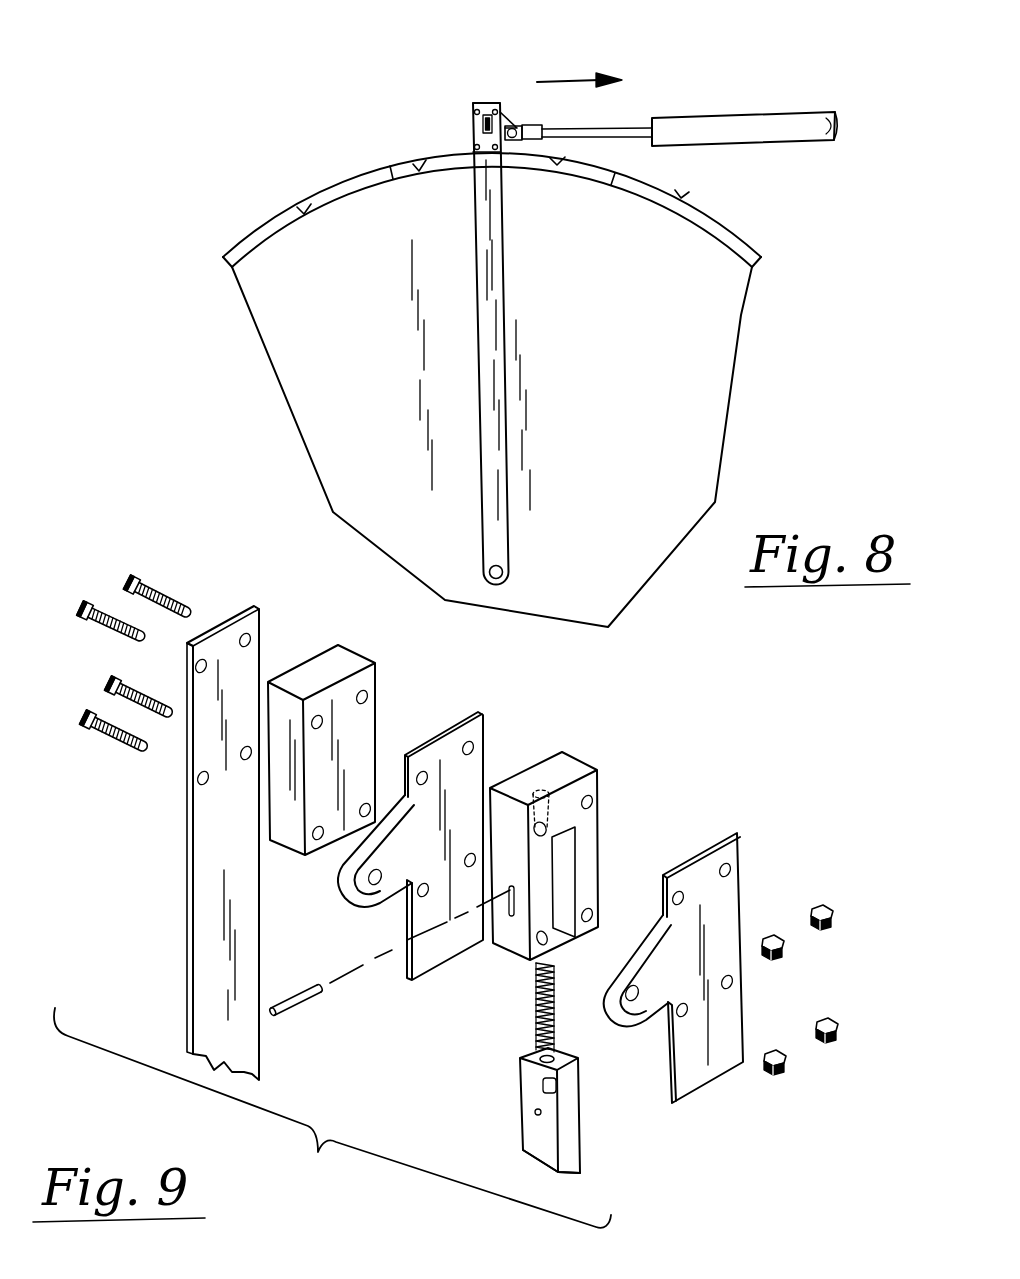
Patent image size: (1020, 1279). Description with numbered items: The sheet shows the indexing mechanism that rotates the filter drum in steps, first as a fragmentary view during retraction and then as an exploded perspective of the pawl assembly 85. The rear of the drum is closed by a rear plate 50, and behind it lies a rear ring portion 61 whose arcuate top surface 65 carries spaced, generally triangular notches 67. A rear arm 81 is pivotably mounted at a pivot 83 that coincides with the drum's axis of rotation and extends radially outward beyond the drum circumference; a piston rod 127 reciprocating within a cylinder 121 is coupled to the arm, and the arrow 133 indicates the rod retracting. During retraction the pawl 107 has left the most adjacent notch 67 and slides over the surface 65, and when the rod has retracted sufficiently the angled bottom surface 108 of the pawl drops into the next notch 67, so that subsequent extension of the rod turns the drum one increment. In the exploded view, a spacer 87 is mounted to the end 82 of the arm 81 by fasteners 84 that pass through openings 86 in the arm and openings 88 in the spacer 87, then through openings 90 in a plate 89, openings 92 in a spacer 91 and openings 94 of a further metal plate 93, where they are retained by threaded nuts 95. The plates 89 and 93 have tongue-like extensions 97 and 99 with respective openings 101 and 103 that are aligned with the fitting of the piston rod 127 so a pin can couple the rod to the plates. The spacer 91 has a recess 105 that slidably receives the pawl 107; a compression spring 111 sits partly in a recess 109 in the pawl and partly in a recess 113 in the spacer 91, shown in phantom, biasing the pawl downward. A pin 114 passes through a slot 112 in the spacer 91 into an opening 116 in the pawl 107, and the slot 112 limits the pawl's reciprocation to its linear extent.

In FIG. 8, the rear plate 50 is at (356, 306).
In FIG. 8, the rear ring portion 61 is at (458, 156).
In FIG. 8, the arcuate top surface 65 is at (394, 168).
In FIG. 8, the notches 67 is at (428, 168).
In FIG. 8, the rear arm 81 is at (504, 305).
In FIG. 8, the pivot 83 is at (508, 565).
In FIG. 8, the cylinder 121 is at (757, 122).
In FIG. 8, the piston rod 127 is at (612, 126).
In FIG. 8, the arrow 133 is at (573, 80).
In FIG. 9, the end of the arm 82 is at (226, 612).
In FIG. 9, the fasteners 84 is at (90, 603).
In FIG. 9, the pawl assembly 85 is at (446, 1026).
In FIG. 9, the openings 86 is at (251, 640).
In FIG. 9, the spacer 87 is at (344, 656).
In FIG. 9, the openings 88 is at (369, 693).
In FIG. 9, the plate 89 is at (478, 718).
In FIG. 9, the openings 90 is at (428, 771).
In FIG. 9, the spacer 91 is at (591, 838).
In FIG. 9, the openings 92 is at (596, 796).
In FIG. 9, the metal plate 93 is at (729, 893).
In FIG. 9, the openings 94 is at (730, 871).
In FIG. 9, the threaded nuts 95 is at (831, 1017).
In FIG. 9, the tongue-like extension 97 is at (357, 869).
In FIG. 9, the tongue-like extension 99 is at (655, 998).
In FIG. 9, the opening 101 is at (373, 892).
In FIG. 9, the opening 103 is at (633, 988).
In FIG. 9, the recess 105 is at (566, 888).
In FIG. 9, the pawl 107 is at (573, 1138).
In FIG. 9, the angled bottom surface 108 is at (567, 1175).
In FIG. 9, the recess 109 is at (543, 1057).
In FIG. 9, the compression spring 111 is at (534, 1005).
In FIG. 9, the slot 112 is at (512, 918).
In FIG. 9, the recess 113 is at (555, 762).
In FIG. 9, the pin 114 is at (298, 1007).
In FIG. 9, the opening 116 is at (535, 1112).